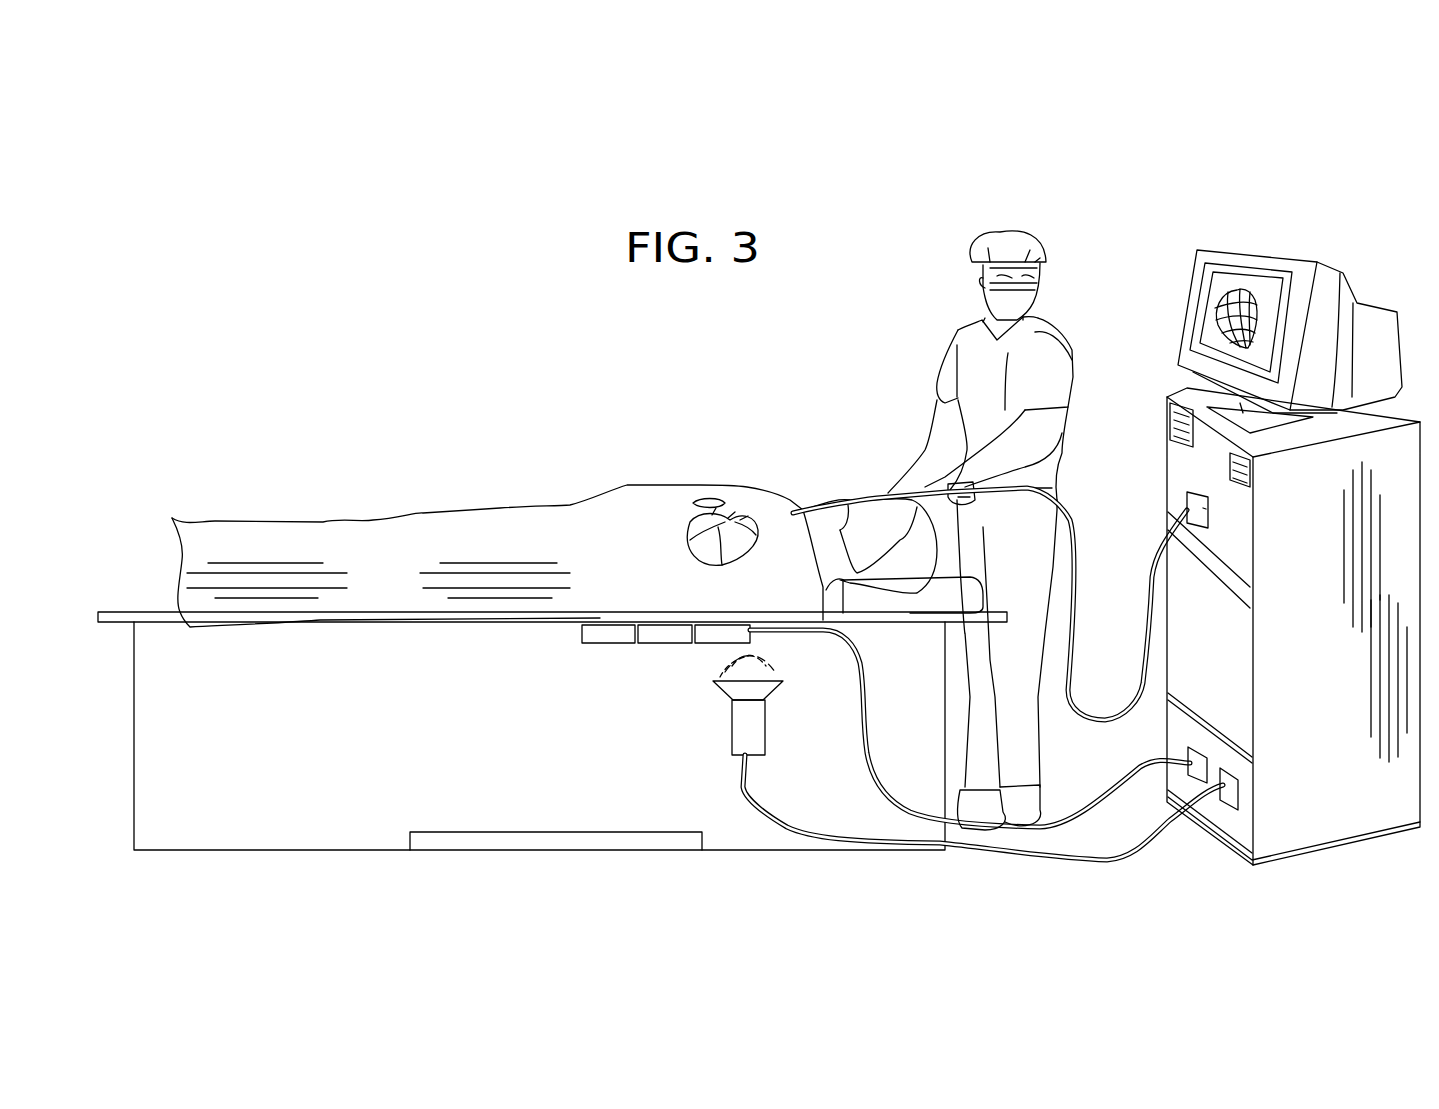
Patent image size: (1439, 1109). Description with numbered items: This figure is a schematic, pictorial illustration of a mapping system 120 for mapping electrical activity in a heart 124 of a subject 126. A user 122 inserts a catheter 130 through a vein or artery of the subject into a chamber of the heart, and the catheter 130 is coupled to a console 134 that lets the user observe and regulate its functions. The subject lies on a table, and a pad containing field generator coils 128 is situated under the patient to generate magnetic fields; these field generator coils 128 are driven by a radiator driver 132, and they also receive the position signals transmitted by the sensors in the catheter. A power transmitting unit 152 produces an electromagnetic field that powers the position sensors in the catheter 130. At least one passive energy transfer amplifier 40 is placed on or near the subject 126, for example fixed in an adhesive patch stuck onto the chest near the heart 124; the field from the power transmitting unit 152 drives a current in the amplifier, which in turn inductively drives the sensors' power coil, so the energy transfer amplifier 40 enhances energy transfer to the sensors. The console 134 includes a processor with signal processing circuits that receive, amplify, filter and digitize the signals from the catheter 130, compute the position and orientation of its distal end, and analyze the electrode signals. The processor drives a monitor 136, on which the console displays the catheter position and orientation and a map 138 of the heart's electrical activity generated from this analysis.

The mapping system 120 is at (1338, 108).
The user 122 is at (970, 375).
The heart 124 is at (682, 518).
The subject 126 is at (900, 574).
The field generator coils 128 is at (707, 637).
The catheter 130 is at (680, 540).
The radiator driver 132 is at (1247, 780).
The console 134 is at (1235, 523).
The monitor 136 is at (1262, 262).
The map 138 is at (1217, 312).
The passive energy transfer amplifier 40 is at (708, 497).
The power transmitting unit 152 is at (748, 720).